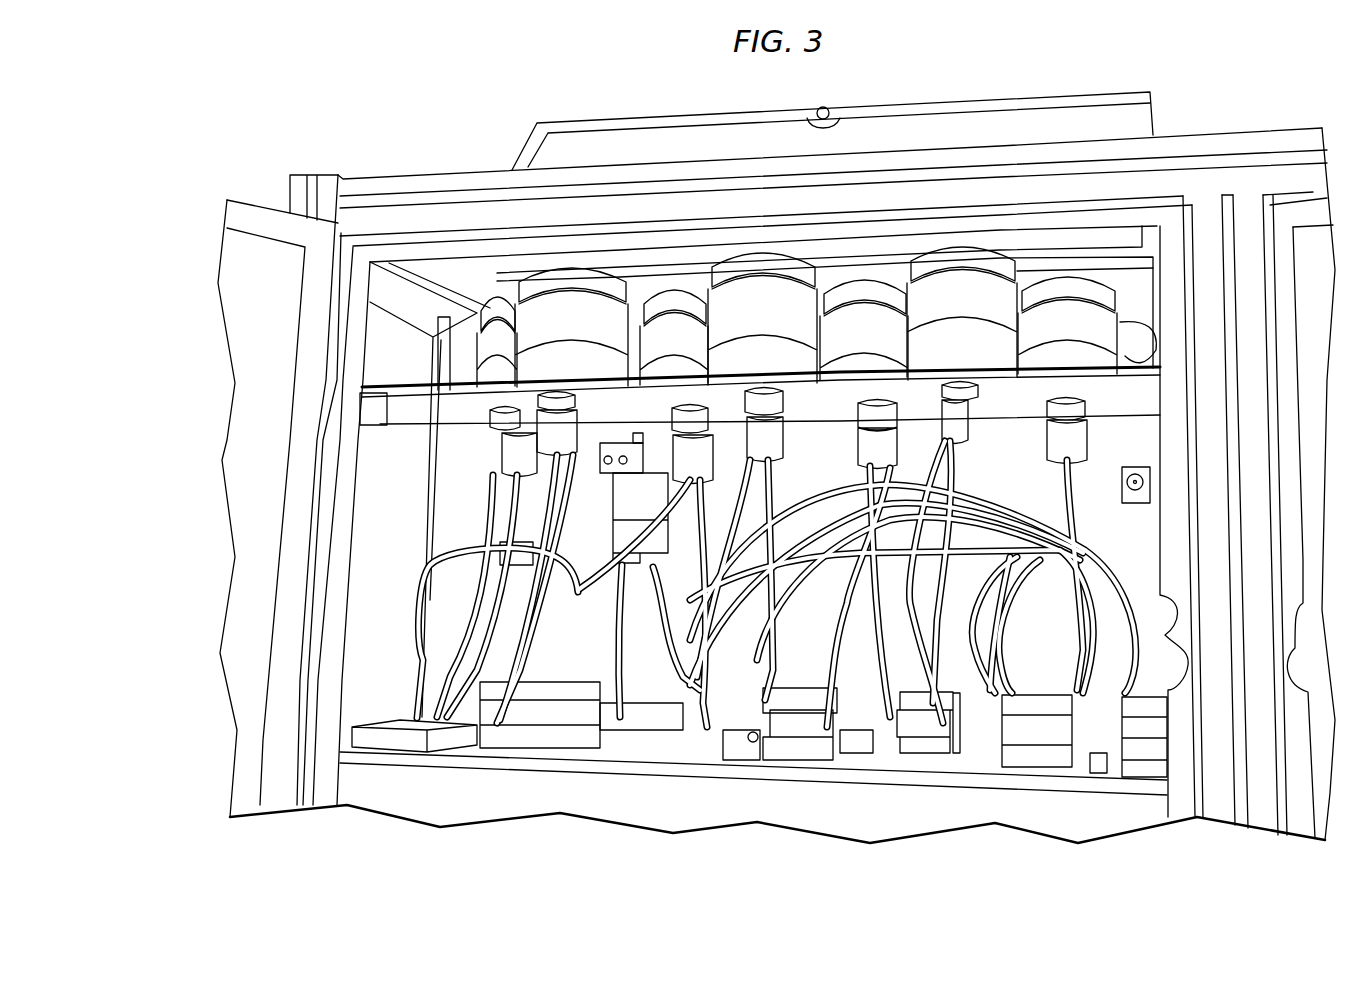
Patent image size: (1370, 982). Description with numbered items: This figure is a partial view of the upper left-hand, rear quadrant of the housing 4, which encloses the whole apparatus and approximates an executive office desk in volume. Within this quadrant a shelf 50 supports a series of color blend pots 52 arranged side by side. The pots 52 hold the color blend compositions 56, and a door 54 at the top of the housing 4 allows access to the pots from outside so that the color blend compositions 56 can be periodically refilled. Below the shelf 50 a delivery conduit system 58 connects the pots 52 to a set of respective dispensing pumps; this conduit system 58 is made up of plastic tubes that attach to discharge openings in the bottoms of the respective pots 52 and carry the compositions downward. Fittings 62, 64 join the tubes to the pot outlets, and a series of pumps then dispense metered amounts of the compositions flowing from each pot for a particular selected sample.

The housing 4 is at (412, 172).
The shelf 50 is at (467, 422).
The color blend pots 52 is at (977, 292).
The door 54 is at (985, 135).
The color blend compositions 56 is at (993, 347).
The delivery conduit system 58 is at (1090, 484).
The tubing 62 is at (968, 487).
The fitting 64 is at (982, 388).